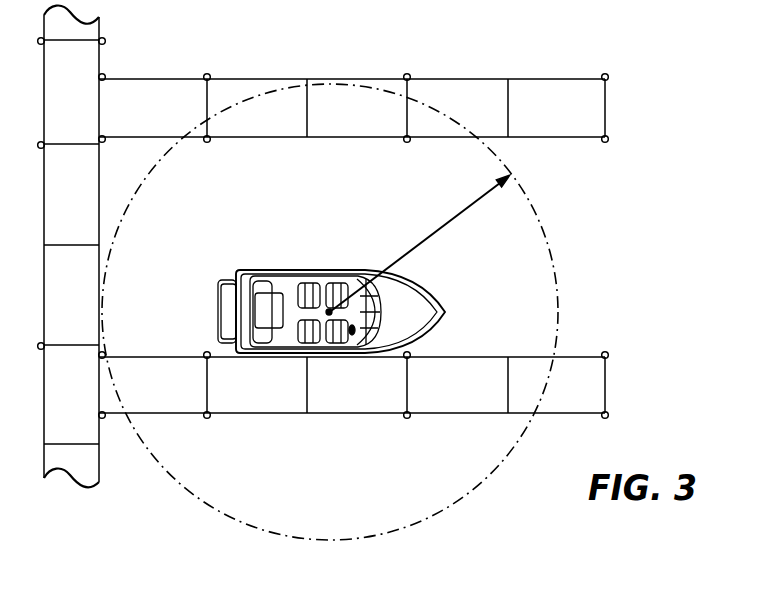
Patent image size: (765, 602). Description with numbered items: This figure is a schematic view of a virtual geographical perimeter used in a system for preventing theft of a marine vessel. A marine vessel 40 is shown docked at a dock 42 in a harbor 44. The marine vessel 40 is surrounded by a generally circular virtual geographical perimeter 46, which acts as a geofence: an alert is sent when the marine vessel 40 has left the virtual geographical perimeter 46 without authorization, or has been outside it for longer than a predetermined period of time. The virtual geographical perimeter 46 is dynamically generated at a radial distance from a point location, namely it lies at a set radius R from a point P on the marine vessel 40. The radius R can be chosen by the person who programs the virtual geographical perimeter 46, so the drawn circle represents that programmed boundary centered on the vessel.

The marine vessel 40 is at (430, 289).
The dock 42 is at (372, 395).
The harbor 44 is at (619, 206).
The virtual geographical perimeter 46 is at (557, 300).
The point P is at (328, 311).
The radius R is at (432, 234).